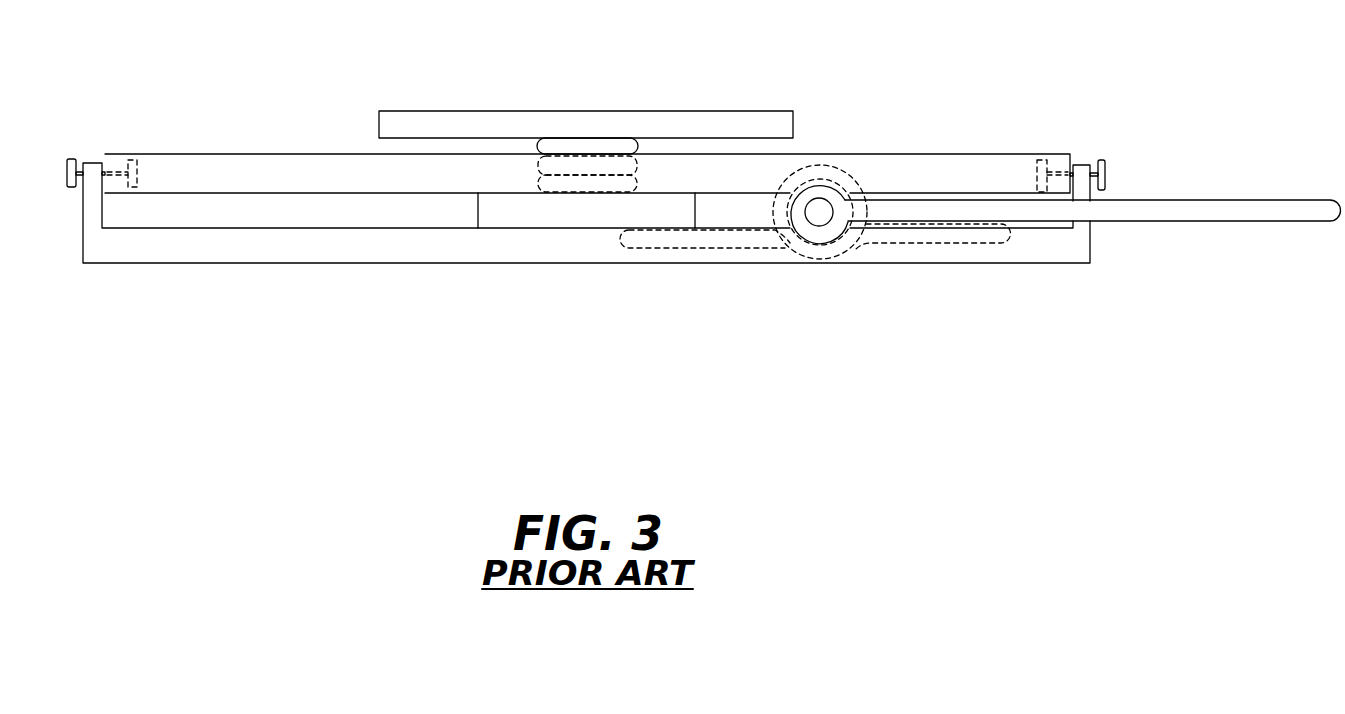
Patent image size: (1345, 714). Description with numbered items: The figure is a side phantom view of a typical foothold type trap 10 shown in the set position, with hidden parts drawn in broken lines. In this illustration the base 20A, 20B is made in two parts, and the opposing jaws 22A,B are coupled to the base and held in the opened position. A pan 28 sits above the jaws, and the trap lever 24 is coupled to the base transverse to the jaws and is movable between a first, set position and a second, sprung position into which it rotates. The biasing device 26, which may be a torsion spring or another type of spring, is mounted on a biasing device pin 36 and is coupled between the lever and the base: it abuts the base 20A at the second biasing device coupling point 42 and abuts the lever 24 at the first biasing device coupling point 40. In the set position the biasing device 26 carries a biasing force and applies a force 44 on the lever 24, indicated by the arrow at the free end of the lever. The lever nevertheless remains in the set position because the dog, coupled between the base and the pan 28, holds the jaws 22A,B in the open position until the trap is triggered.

The foothold type trap 10 is at (100, 70).
The base 20A is at (562, 217).
The base 20B is at (487, 250).
The opposing jaws 22A,B is at (222, 165).
The trap lever 24 is at (1311, 200).
The biasing device 26 is at (778, 208).
The pan 28 is at (398, 117).
The biasing device pin 36 is at (820, 220).
The first biasing device coupling point 40 is at (1010, 224).
The second biasing device coupling point 42 is at (632, 230).
The force 44 is at (1218, 226).